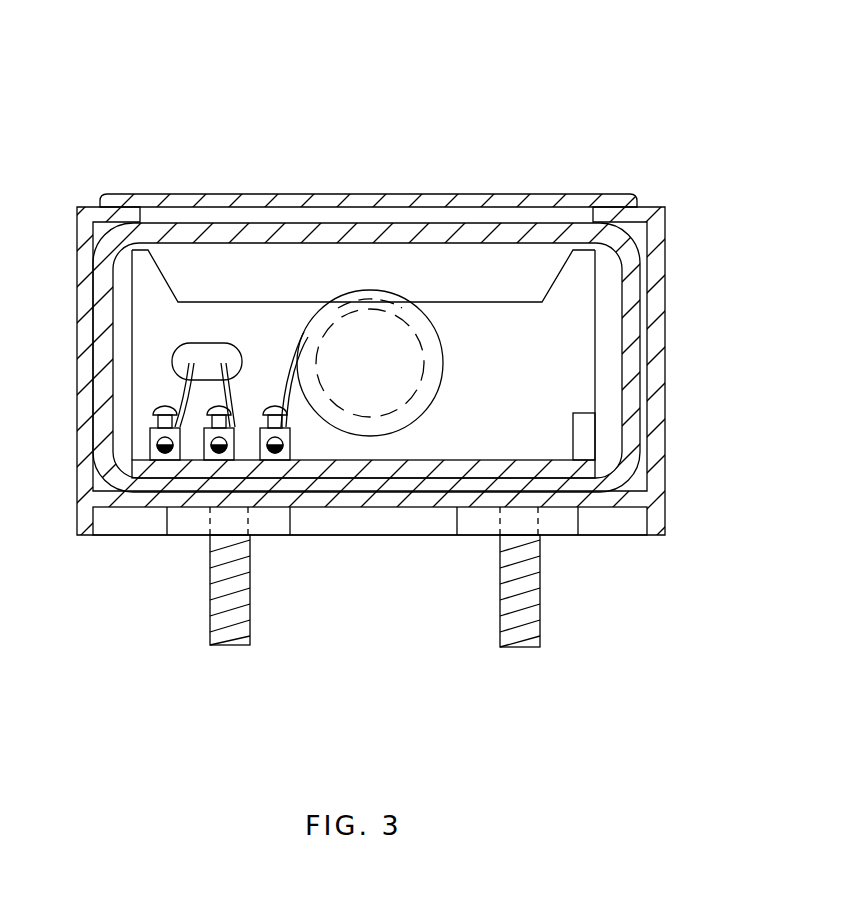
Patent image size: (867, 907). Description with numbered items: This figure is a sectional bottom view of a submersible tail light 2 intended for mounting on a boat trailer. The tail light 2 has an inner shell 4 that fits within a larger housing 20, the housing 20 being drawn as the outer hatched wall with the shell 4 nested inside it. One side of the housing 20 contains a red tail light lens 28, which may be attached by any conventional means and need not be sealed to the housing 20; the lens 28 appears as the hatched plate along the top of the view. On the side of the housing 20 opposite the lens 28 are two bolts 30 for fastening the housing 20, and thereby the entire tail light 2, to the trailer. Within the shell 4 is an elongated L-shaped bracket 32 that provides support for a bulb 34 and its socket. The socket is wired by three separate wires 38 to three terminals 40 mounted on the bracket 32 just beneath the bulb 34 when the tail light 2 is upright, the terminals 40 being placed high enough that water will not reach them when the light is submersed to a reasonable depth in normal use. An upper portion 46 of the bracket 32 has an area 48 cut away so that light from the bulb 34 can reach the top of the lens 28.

The submersible tail light 2 is at (103, 118).
The inner shell 4 is at (623, 471).
The housing 20 is at (92, 500).
The red tail light lens 28 is at (342, 203).
The bolts 30 is at (210, 600).
The L-shaped bracket 32 is at (573, 413).
The bulb 34 is at (422, 323).
The wires 38 is at (190, 390).
The terminals 40 is at (160, 448).
The upper portion of the bracket 46 is at (573, 312).
The cut-away area 48 is at (527, 268).